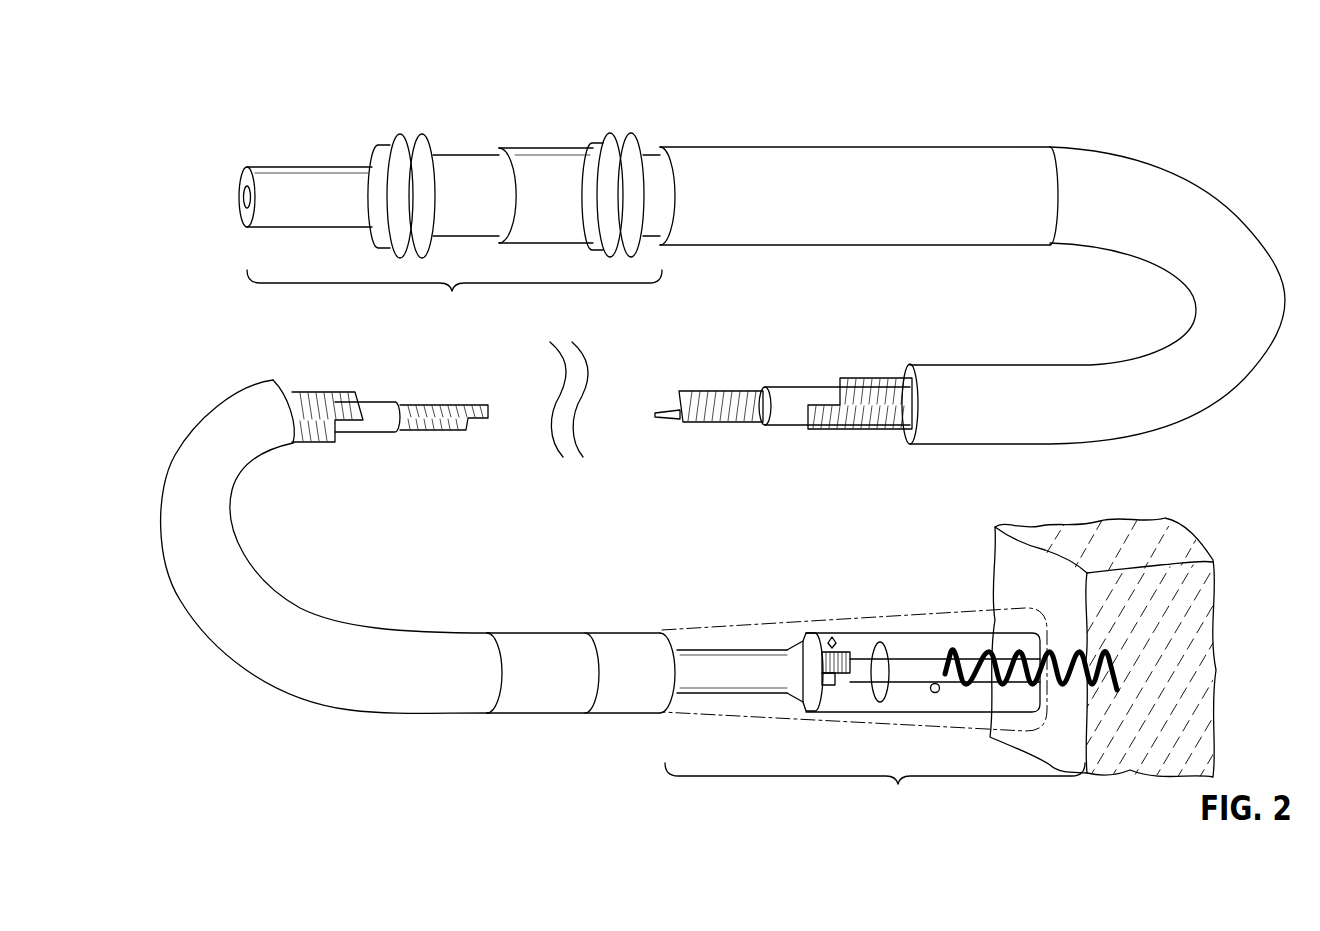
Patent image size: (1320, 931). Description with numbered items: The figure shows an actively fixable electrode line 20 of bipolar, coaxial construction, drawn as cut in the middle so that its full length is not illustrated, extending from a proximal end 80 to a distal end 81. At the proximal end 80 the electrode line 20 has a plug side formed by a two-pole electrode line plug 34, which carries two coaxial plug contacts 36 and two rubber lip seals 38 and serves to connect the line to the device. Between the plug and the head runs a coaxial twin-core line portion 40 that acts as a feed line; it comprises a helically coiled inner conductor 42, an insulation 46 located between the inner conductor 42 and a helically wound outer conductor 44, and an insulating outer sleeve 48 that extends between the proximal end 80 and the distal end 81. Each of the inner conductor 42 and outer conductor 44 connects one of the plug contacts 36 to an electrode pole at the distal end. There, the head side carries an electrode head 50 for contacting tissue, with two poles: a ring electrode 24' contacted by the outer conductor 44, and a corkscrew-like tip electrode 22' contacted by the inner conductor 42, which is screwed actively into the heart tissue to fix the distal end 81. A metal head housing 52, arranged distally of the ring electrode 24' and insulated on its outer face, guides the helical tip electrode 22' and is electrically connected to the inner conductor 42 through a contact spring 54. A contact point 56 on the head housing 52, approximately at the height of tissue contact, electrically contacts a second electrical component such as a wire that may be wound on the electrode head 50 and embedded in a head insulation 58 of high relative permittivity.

The electrode line 20 is at (272, 732).
The proximal end 80 is at (340, 108).
The plug contacts 36 is at (307, 188).
The rubber lip seals 38 is at (422, 138).
The electrode line plug 34 is at (454, 297).
The coaxial twin-core line portion 40 is at (878, 333).
The inner conductor 42 is at (728, 420).
The insulation 46 is at (797, 412).
The outer conductor 44 is at (861, 410).
The insulating outer sleeve 48 is at (963, 423).
The ring electrode 24' is at (418, 546).
The head insulation 58 is at (738, 637).
The contact point 56 is at (832, 637).
The head housing 52 is at (960, 632).
The distal end 81 is at (765, 707).
The contact spring 54 is at (880, 705).
The tip electrode 22' is at (1031, 711).
The electrode head 50 is at (875, 788).